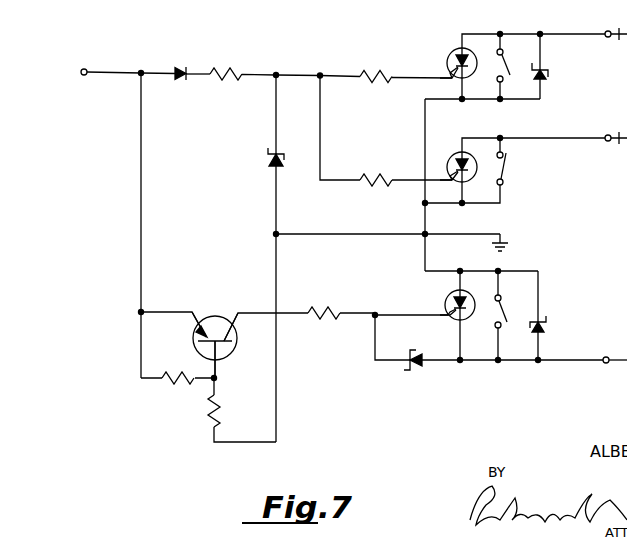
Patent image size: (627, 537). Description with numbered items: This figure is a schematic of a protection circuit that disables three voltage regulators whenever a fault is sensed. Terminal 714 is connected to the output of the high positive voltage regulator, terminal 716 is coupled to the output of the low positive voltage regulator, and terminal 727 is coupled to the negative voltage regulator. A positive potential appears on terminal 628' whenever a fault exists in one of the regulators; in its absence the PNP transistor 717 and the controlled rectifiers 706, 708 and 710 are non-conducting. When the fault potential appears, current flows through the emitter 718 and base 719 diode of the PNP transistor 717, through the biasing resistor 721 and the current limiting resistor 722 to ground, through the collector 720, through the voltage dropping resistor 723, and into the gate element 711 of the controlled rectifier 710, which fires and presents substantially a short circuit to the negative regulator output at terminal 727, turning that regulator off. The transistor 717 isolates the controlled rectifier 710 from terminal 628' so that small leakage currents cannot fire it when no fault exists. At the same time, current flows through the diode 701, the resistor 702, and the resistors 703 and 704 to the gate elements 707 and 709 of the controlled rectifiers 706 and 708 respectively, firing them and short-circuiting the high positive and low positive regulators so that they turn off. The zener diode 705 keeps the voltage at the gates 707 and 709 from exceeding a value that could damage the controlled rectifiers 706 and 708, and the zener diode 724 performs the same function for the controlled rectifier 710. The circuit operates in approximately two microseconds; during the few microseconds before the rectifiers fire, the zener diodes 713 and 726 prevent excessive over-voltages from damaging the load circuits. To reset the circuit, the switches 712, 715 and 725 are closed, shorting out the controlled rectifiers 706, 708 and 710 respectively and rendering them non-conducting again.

The terminal 628' is at (51, 71).
The diode 701 is at (178, 70).
The resistor 702 is at (232, 68).
The resistor 703 is at (368, 72).
The resistor 704 is at (366, 188).
The zener diode 705 is at (268, 161).
The controlled rectifier 706 is at (452, 52).
The gate element 707 is at (450, 73).
The controlled rectifier 708 is at (453, 154).
The gate element 709 is at (448, 171).
The controlled rectifier 710 is at (449, 296).
The gate element 711 is at (456, 318).
The switch 712 is at (508, 64).
The zener diode 713 is at (545, 78).
The terminal 714 is at (608, 30).
The switch 715 is at (505, 168).
The terminal 716 is at (608, 142).
The PNP transistor 717 is at (213, 316).
The emitter 718 is at (198, 335).
The base 719 is at (219, 350).
The collector 720 is at (227, 320).
The biasing resistor 721 is at (168, 385).
The current limiting resistor 722 is at (206, 420).
The voltage dropping resistor 723 is at (326, 307).
The zener diode 724 is at (415, 372).
The switch 725 is at (505, 309).
The zener diode 726 is at (547, 320).
The terminal 727 is at (606, 364).